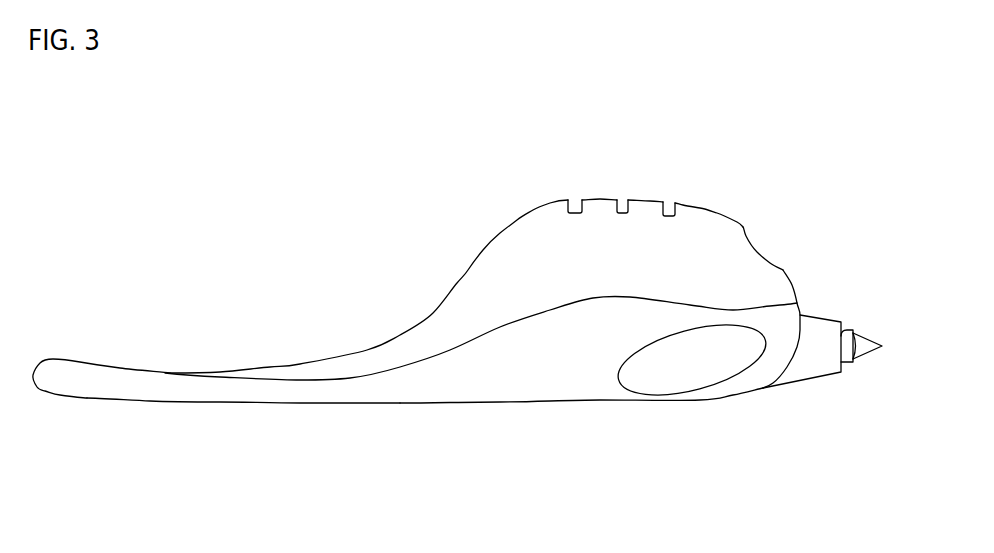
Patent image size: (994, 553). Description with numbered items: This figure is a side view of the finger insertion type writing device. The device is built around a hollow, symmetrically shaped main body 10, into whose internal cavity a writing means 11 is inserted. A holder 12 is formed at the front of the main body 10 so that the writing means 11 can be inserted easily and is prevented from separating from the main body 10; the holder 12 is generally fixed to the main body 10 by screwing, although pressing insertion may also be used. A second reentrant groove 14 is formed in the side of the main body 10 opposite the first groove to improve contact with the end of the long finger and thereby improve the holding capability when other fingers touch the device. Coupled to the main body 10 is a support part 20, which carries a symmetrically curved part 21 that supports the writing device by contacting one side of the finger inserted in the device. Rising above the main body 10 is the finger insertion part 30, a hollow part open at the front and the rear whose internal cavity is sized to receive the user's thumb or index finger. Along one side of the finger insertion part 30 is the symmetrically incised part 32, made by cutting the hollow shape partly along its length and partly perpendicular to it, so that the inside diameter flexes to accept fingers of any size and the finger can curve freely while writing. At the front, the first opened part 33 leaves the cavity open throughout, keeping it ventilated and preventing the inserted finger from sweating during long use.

The main body 10 is at (560, 378).
The writing means 11 is at (852, 334).
The holder 12 is at (815, 355).
The second reentrant groove 14 is at (702, 362).
The support part 20 is at (103, 382).
The symmetrically curved part 21 is at (240, 392).
The finger insertion part 30 is at (550, 247).
The symmetrically incised part 32 is at (573, 200).
The first opened part 33 is at (757, 251).